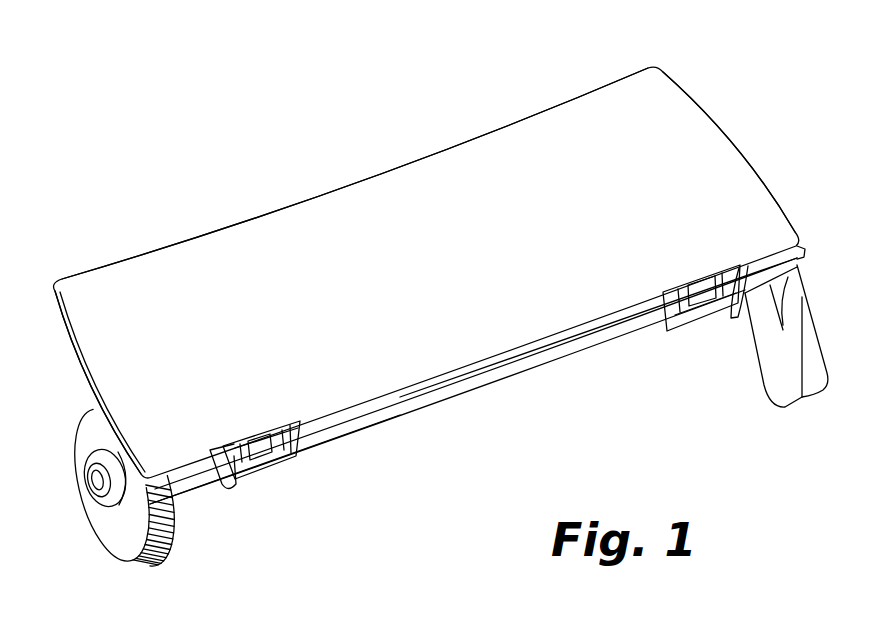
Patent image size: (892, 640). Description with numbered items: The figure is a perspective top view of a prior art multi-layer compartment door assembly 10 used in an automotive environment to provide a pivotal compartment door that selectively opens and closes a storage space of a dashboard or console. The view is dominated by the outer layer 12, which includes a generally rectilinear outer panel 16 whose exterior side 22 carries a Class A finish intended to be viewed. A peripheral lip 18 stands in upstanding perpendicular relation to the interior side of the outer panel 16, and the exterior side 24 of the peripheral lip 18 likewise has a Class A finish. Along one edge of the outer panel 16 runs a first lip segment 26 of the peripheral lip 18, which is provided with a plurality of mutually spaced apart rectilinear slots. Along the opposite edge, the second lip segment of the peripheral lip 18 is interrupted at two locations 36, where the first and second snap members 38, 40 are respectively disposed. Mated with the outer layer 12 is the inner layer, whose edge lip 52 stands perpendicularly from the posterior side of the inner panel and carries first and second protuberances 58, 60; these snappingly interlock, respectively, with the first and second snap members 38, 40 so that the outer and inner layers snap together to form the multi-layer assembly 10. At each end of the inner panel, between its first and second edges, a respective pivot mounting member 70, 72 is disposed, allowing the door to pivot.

The multi-layer compartment door assembly 10 is at (708, 80).
The outer layer 12 is at (388, 166).
The outer panel 16 is at (156, 272).
The peripheral lip 18 is at (83, 357).
The exterior side 22 is at (523, 155).
The exterior side 24 is at (84, 449).
The first lip segment 26 is at (297, 200).
The locations 36 is at (233, 483).
The first snap member 38 is at (661, 340).
The second snap member 40 is at (302, 461).
The edge lip 52 is at (520, 358).
The first protuberance 58 is at (705, 312).
The second protuberance 60 is at (277, 457).
The pivot mounting member 70 is at (756, 402).
The pivot mounting member 72 is at (103, 548).